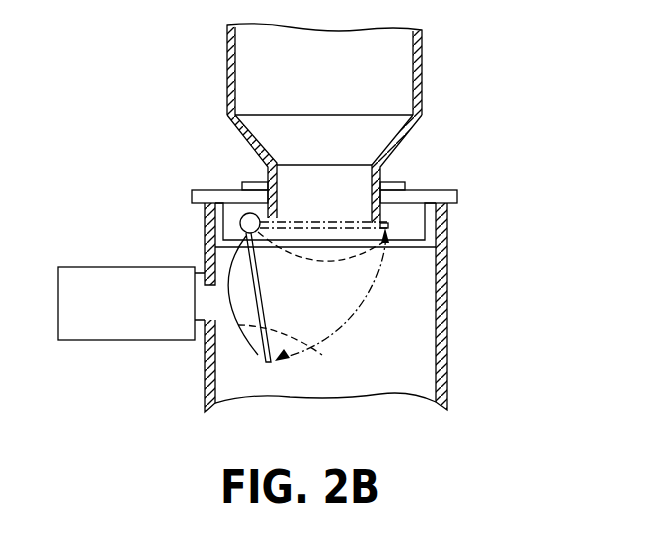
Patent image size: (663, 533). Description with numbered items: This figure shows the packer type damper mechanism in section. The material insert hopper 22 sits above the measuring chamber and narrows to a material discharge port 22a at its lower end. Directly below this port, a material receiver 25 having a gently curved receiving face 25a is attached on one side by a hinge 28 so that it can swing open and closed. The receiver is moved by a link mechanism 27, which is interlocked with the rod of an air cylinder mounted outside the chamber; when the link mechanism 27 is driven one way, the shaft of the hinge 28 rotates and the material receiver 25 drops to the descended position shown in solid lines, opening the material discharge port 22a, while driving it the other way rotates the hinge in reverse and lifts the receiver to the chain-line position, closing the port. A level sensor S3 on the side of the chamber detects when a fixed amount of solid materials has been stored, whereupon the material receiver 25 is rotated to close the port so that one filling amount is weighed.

The material insert hopper 22 is at (423, 80).
The material discharge port 22a is at (387, 172).
The link mechanism 27 is at (482, 149).
The level sensor S3 is at (163, 277).
The hinge 28 is at (245, 216).
The material receiver 25 is at (258, 355).
The receiving face 25a is at (322, 355).